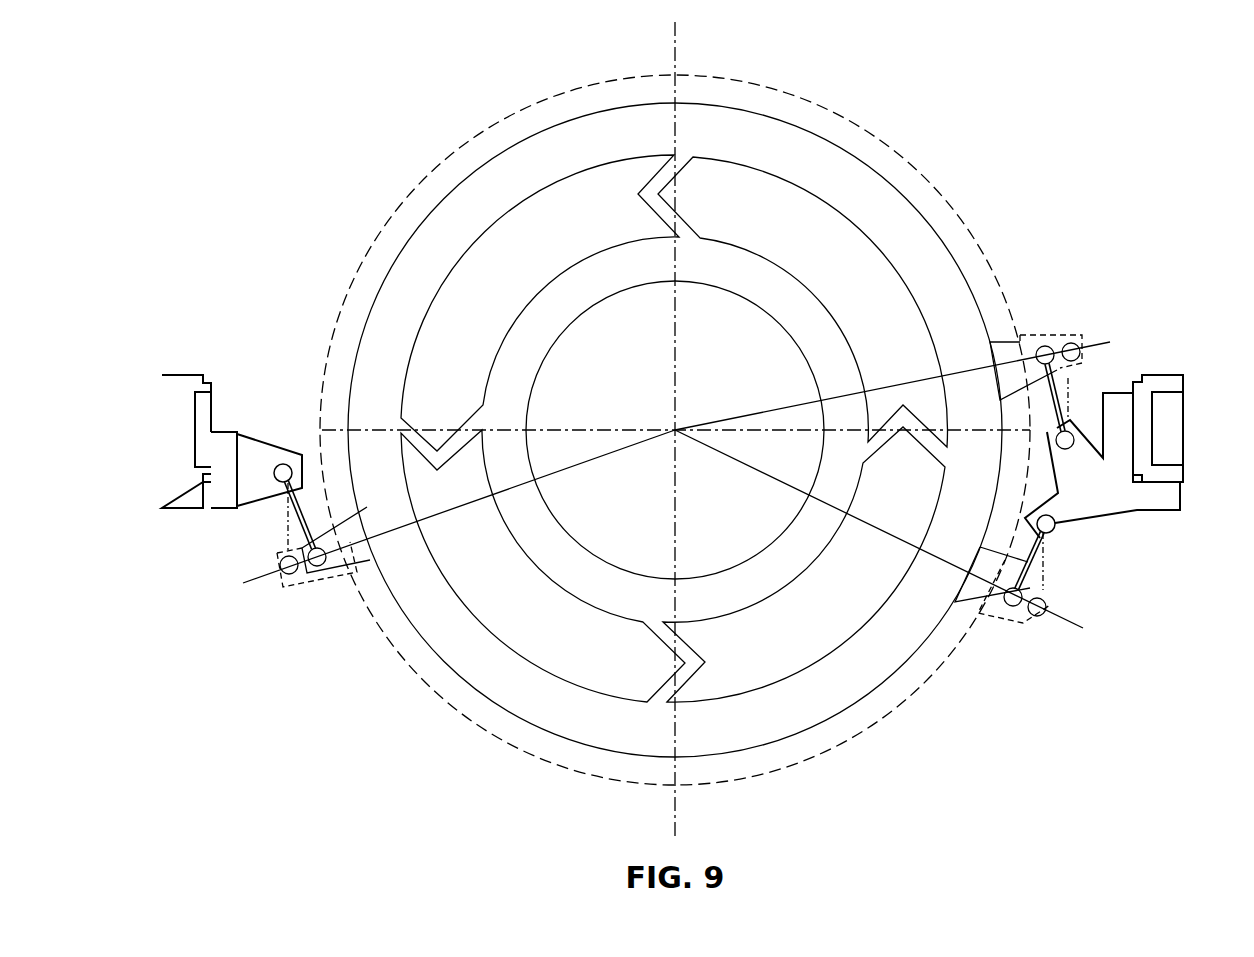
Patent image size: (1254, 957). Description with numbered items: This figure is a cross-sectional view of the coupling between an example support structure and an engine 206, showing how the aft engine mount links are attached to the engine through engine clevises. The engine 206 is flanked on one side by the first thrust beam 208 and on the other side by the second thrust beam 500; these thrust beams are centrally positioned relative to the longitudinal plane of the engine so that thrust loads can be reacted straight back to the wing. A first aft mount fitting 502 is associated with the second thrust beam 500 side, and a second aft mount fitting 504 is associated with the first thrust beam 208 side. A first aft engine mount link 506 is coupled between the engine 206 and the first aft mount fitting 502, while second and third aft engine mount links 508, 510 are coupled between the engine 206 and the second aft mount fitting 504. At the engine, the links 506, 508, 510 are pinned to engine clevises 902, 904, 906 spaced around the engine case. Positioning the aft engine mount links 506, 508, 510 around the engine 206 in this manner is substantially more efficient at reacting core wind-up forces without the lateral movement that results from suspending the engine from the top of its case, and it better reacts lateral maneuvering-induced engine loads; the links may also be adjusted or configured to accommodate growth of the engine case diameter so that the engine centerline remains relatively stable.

The engine 206 is at (620, 535).
The first thrust beam 208 is at (1163, 373).
The second thrust beam 500 is at (183, 374).
The first aft mount fitting 502 is at (220, 497).
The second aft mount fitting 504 is at (1113, 510).
The first aft engine mount link 506 is at (297, 523).
The second aft engine mount link 508 is at (1055, 398).
The third aft engine mount link 510 is at (1030, 560).
The engine clevis 902 is at (358, 558).
The engine clevis 904 is at (1003, 350).
The engine clevis 906 is at (988, 600).